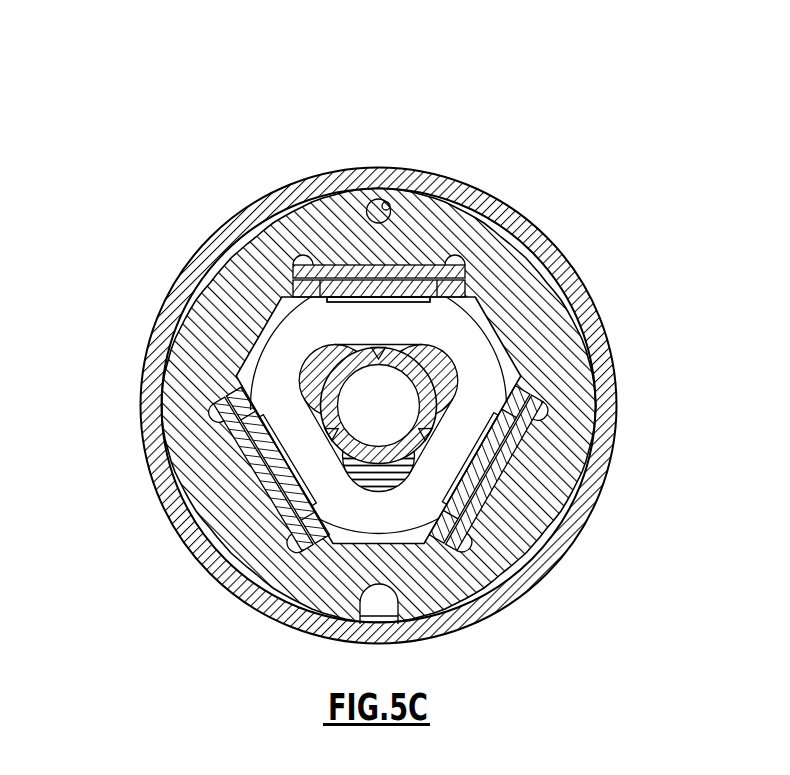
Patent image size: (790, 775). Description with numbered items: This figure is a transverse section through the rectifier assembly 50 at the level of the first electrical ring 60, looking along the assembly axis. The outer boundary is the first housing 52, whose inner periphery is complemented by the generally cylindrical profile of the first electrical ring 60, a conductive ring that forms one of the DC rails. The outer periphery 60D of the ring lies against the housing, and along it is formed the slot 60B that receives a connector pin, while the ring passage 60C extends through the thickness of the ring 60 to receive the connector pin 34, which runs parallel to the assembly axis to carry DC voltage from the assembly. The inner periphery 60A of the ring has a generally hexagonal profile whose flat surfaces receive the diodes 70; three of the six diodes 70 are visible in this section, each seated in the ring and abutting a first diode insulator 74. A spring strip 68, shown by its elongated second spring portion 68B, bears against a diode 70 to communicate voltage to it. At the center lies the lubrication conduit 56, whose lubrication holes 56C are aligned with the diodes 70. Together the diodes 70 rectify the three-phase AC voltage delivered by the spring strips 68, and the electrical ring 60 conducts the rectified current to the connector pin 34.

The rectifier assembly 50 is at (134, 156).
The first housing 52 is at (553, 238).
The first electrical ring 60 is at (490, 214).
The inner periphery 60A is at (467, 232).
The slot 60B is at (375, 609).
The ring passage 60C is at (411, 265).
The outer periphery 60D is at (612, 367).
The connector pin 34 is at (372, 202).
The lubrication conduit 56 is at (425, 378).
The lubrication holes 56C is at (383, 349).
The spring strip 68 is at (340, 300).
The second spring portion 68B is at (378, 299).
The diode 70 is at (303, 265).
The first diode insulator 74 is at (287, 262).